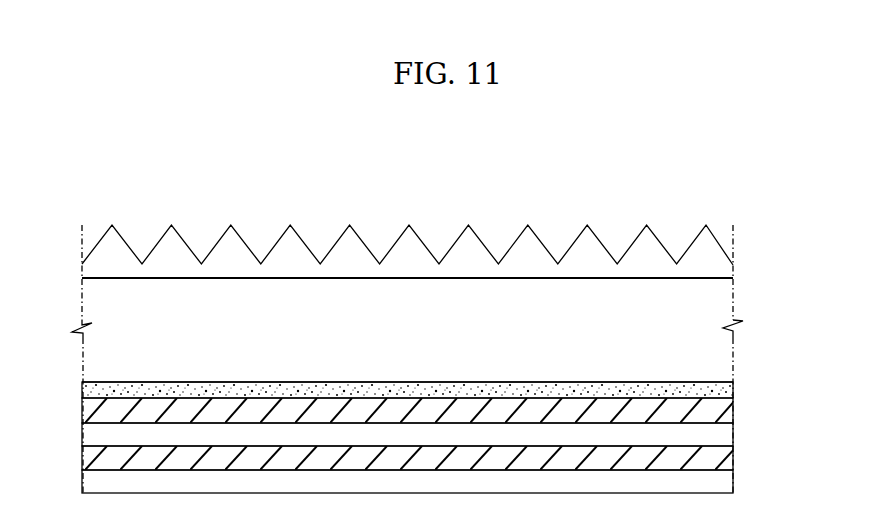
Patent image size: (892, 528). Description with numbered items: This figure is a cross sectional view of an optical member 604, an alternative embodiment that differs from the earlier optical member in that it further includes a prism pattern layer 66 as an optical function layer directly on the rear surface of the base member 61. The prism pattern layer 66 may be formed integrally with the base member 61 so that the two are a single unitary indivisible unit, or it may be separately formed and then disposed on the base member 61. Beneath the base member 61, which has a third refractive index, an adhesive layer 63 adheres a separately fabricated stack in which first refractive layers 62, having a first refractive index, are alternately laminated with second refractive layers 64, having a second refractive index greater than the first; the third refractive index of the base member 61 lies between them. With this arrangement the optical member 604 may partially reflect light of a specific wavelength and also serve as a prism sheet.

The optical member 604 is at (628, 174).
The prism pattern layer 66 is at (713, 257).
The base member 61 is at (713, 297).
The adhesive layer 63 is at (713, 385).
The first refractive layers 62 is at (713, 410).
The second refractive layers 64 is at (713, 437).